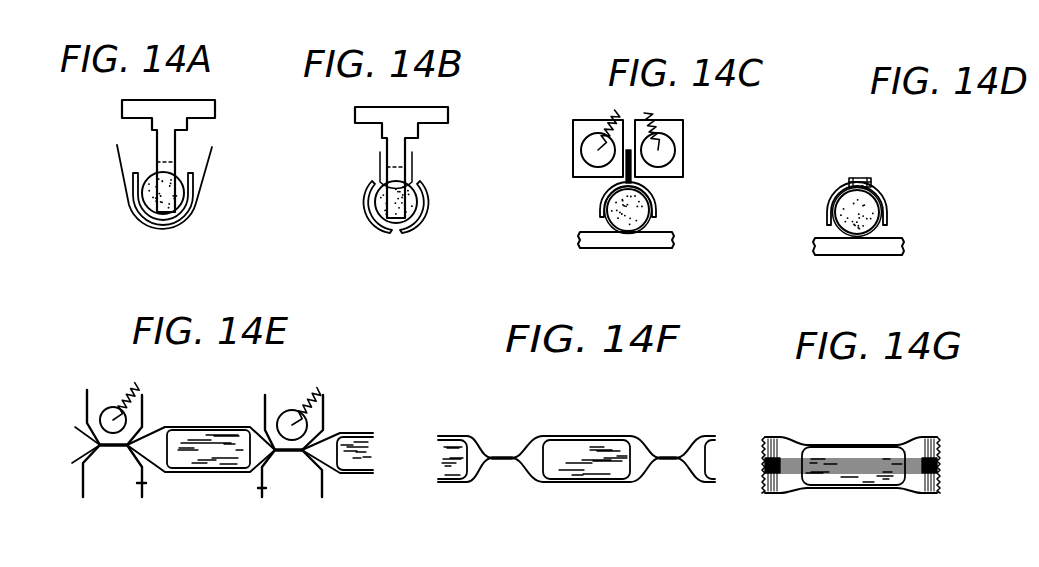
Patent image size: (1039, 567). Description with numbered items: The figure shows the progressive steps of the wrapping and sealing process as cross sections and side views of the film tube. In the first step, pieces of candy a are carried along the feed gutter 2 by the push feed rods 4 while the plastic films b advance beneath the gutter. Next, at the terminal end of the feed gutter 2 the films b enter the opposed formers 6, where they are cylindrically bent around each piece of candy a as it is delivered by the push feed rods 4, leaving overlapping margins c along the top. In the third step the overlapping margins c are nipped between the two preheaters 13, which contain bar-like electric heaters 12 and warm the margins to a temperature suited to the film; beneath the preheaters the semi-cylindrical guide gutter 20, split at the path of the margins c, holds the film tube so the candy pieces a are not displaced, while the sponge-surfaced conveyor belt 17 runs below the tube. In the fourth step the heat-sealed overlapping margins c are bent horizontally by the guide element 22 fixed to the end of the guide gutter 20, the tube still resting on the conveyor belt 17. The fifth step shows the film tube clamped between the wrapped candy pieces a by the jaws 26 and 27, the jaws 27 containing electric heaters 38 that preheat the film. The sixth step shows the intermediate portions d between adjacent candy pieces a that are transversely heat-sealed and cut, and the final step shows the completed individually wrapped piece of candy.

In FIG. 14A, the feed gutter 2 is at (193, 185).
In FIG. 14A, the push feed rods 4 is at (168, 170).
In FIG. 14B, the push feed rods 4 is at (397, 193).
In FIG. 14B, the formers 6 is at (372, 220).
In FIG. 14C, the bar-like electric heaters 12 is at (580, 155).
In FIG. 14C, the preheaters 13 is at (585, 123).
In FIG. 14C, the sponge-surfaced conveyor belt 17 is at (623, 248).
In FIG. 14D, the sponge-surfaced conveyor belt 17 is at (867, 255).
In FIG. 14C, the semi-cylindrical guide gutter 20 is at (603, 203).
In FIG. 14D, the semi-cylindrical guide gutter 20 is at (827, 207).
In FIG. 14D, the guide element 22 is at (858, 178).
In FIG. 14E, the jaws 26 is at (140, 488).
In FIG. 14E, the jaws 27 is at (143, 397).
In FIG. 14E, the electric heaters 38 is at (102, 410).
In FIG. 14A, the pieces of candy a is at (143, 195).
In FIG. 14B, the pieces of candy a is at (417, 200).
In FIG. 14C, the pieces of candy a is at (607, 220).
In FIG. 14D, the pieces of candy a is at (838, 231).
In FIG. 14E, the pieces of candy a is at (207, 460).
In FIG. 14F, the pieces of candy a is at (590, 474).
In FIG. 14G, the pieces of candy a is at (852, 485).
In FIG. 14A, the plastic films b is at (197, 193).
In FIG. 14B, the plastic films b is at (382, 170).
In FIG. 14C, the plastic films b is at (647, 223).
In FIG. 14D, the plastic films b is at (877, 231).
In FIG. 14E, the plastic films b is at (210, 427).
In FIG. 14F, the plastic films b is at (597, 436).
In FIG. 14G, the plastic films b is at (855, 445).
In FIG. 14C, the overlapping margins c is at (632, 175).
In FIG. 14D, the overlapping margins c is at (872, 186).
In FIG. 14F, the intermediate portions d is at (506, 457).